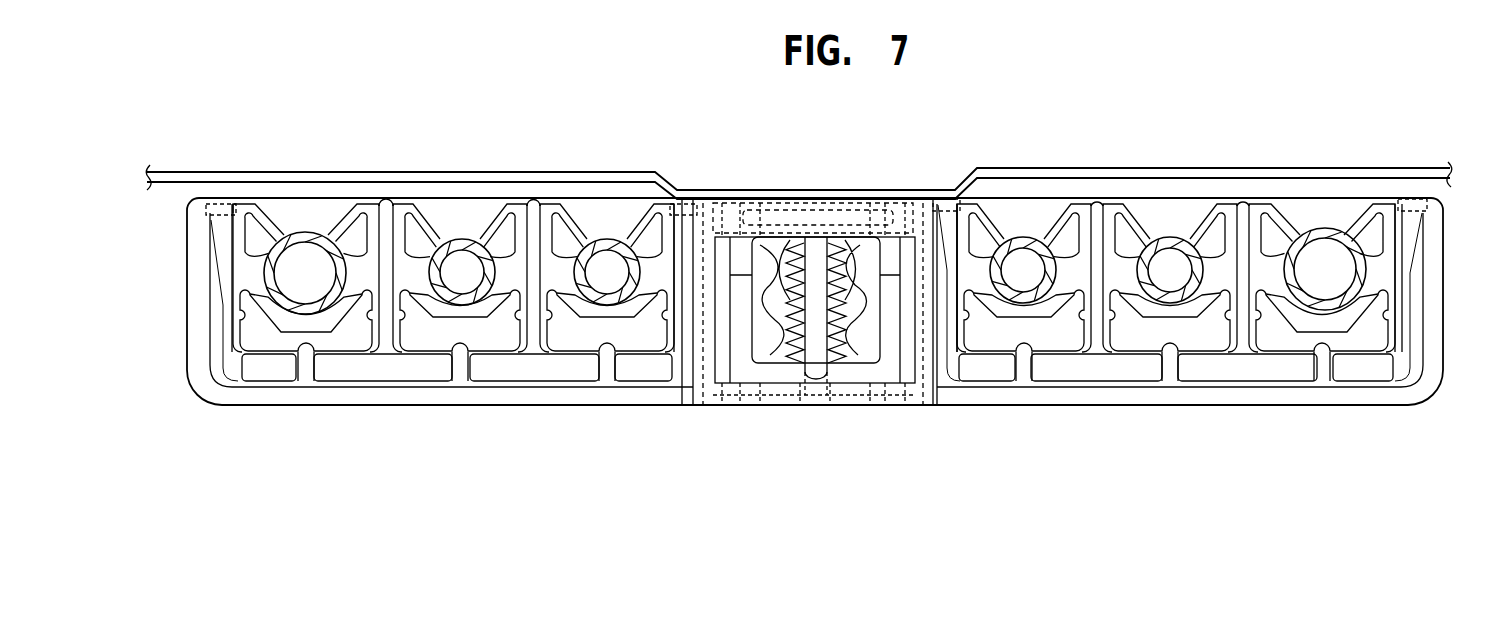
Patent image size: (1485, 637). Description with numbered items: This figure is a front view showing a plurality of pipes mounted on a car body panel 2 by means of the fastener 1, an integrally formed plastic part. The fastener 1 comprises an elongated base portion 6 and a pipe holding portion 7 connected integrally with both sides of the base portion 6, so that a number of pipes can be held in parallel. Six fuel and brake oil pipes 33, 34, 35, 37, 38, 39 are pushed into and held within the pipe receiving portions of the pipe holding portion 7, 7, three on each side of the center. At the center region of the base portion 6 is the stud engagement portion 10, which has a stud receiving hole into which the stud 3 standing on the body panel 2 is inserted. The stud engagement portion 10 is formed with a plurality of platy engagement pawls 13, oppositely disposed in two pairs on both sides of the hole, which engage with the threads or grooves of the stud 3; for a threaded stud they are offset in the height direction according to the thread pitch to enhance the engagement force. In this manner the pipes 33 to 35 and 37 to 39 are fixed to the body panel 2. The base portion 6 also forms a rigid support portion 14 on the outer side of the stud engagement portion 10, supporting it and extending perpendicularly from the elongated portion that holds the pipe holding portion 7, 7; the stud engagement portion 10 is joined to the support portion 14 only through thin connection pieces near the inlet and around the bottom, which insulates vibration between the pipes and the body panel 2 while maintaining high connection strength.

The fastener 1 is at (565, 414).
The car body panel 2 is at (520, 172).
The stud 3 is at (855, 222).
The base portion 6 is at (390, 410).
The pipe holding portion 7 is at (238, 358).
The stud engagement portion 10 is at (722, 368).
The engagement pawls 13 is at (777, 357).
The support portion 14 is at (688, 367).
The pipe 33 is at (305, 232).
The pipe 34 is at (462, 239).
The pipe 35 is at (607, 239).
The pipe 37 is at (1023, 237).
The pipe 38 is at (1170, 237).
The pipe 39 is at (1325, 228).